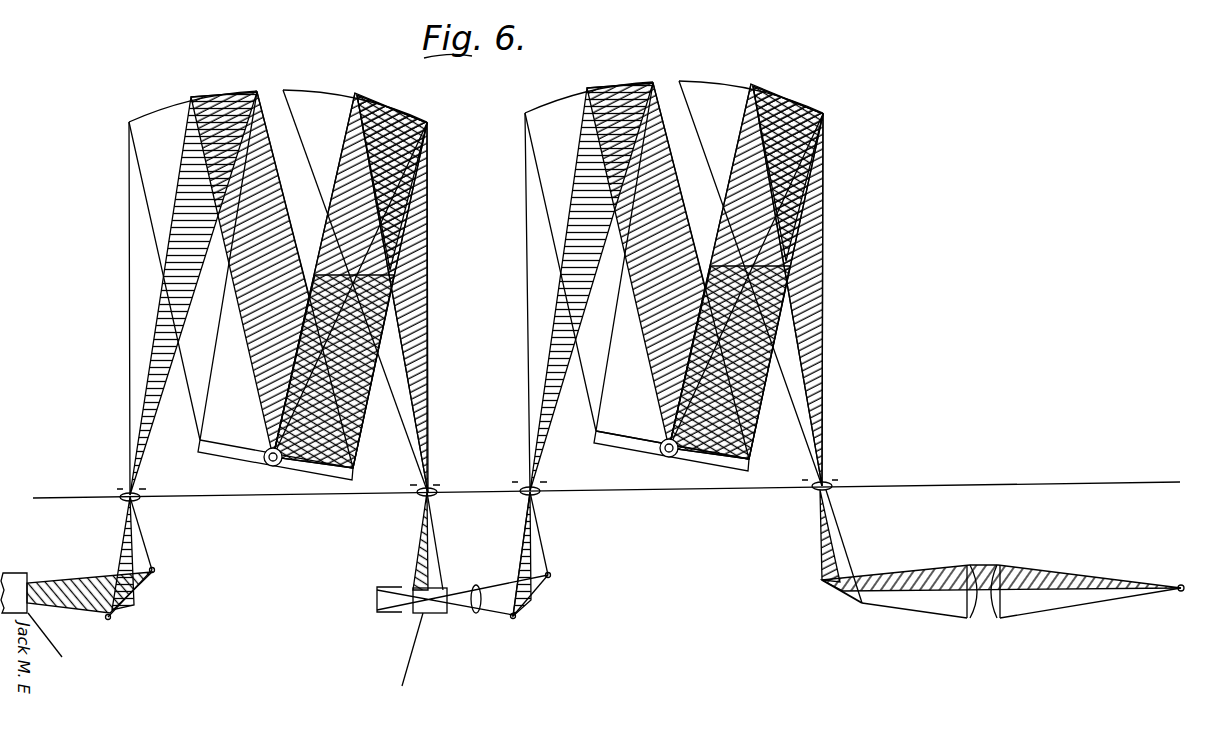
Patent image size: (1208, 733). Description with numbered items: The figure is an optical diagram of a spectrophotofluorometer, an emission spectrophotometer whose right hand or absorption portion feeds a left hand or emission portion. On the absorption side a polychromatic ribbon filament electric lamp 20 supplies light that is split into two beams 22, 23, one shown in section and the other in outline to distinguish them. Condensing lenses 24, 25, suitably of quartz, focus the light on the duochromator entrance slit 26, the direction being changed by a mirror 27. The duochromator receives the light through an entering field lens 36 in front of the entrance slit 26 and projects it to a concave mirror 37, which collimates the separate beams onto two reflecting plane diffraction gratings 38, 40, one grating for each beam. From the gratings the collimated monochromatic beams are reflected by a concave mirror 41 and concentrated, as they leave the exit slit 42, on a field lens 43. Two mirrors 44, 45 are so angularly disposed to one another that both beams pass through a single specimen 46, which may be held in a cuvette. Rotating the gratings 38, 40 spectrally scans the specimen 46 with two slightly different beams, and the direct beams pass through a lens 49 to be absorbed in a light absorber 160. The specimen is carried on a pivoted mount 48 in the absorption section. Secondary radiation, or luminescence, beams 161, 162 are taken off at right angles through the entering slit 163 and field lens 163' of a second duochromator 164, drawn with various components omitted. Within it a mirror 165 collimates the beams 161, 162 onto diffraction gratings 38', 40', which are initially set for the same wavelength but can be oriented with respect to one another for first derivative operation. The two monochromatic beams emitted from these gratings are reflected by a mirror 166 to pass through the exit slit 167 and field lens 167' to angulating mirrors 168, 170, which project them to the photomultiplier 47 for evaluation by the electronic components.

The duochromator 164 is at (276, 84).
The mirror 166 is at (193, 96).
The mirror 165 is at (358, 95).
The secondary radiation beam 161 is at (273, 280).
The secondary radiation beam 162 is at (363, 388).
The diffraction grating 38' is at (275, 481).
The diffraction grating 40' is at (241, 467).
The exit slit 167 is at (98, 479).
The field lens 167' is at (164, 553).
The angulating mirror 168 is at (154, 573).
The angulating mirror 170 is at (121, 601).
The photomultiplier 47 is at (12, 582).
The entering slit 163 is at (450, 470).
The field lens 163' is at (454, 541).
The specimen 46 is at (440, 614).
The light absorber 160 is at (390, 612).
The lens 49 is at (478, 613).
The mirror 44 is at (542, 590).
The mirror 45 is at (527, 610).
The field lens 43 is at (537, 498).
The exit slit 42 is at (543, 471).
The concave mirror 37 is at (674, 273).
The concave mirror 41 is at (638, 270).
The diffraction grating 38 is at (671, 475).
The diffraction grating 40 is at (672, 457).
The mirror pivot 48 is at (654, 488).
The entering field lens 36 is at (842, 503).
The duochromator entrance slit 26 is at (837, 467).
The mirror 27 is at (847, 595).
The beam 22 is at (1035, 577).
The beam 23 is at (1060, 600).
The condensing lens 25 is at (965, 618).
The condensing lens 24 is at (997, 620).
The ribbon filament electric lamp 20 is at (1181, 585).